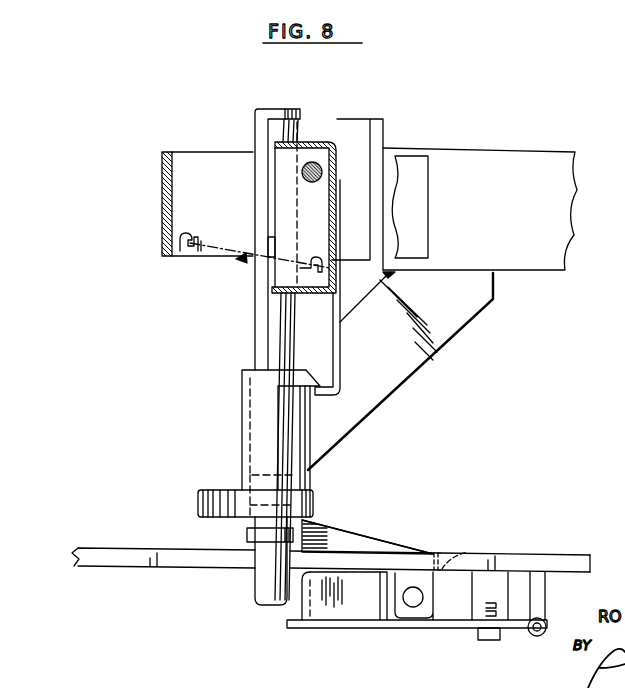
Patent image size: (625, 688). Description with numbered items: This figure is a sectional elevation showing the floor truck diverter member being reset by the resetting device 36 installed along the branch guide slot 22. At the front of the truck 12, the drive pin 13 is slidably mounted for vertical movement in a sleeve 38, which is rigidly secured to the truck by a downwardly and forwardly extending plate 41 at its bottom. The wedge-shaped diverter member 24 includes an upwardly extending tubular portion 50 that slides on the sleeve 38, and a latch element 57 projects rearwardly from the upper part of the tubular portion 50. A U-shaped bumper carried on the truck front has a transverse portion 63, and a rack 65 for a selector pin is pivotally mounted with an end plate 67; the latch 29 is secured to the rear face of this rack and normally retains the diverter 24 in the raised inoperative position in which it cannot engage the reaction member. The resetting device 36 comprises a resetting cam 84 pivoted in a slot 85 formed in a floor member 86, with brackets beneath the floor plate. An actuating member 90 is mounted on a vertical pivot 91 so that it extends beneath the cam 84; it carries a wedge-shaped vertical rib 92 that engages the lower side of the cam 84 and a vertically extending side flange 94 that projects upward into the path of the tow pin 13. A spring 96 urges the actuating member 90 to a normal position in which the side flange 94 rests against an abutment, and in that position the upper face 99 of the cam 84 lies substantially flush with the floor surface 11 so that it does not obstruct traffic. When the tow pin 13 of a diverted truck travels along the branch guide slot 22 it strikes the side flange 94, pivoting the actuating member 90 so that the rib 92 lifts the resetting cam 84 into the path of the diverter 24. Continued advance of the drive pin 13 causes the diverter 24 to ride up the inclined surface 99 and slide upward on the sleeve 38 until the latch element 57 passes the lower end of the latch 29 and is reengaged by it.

The floor surface 11 is at (522, 560).
The truck 12 is at (533, 160).
The drive pin 13 is at (262, 595).
The branch guide slot 22 is at (553, 566).
The diverter member 24 is at (200, 493).
The latch 29 is at (341, 339).
The resetting device 36 is at (338, 524).
The sleeve 38 is at (265, 333).
The plate 41 is at (372, 410).
The tubular portion 50 is at (242, 421).
The latch element 57 is at (309, 382).
The transverse portion 63 is at (164, 205).
The rack 65 is at (333, 142).
The plate 67 is at (288, 219).
The resetting cam 84 is at (386, 550).
The slot 85 is at (455, 553).
The floor member 86 is at (570, 558).
The actuating member 90 is at (455, 625).
The vertical pivot 91 is at (492, 640).
The wedge-shaped vertical rib 92 is at (302, 606).
The side flange 94 is at (362, 604).
The spring 96 is at (543, 634).
The upper face 99 is at (366, 537).